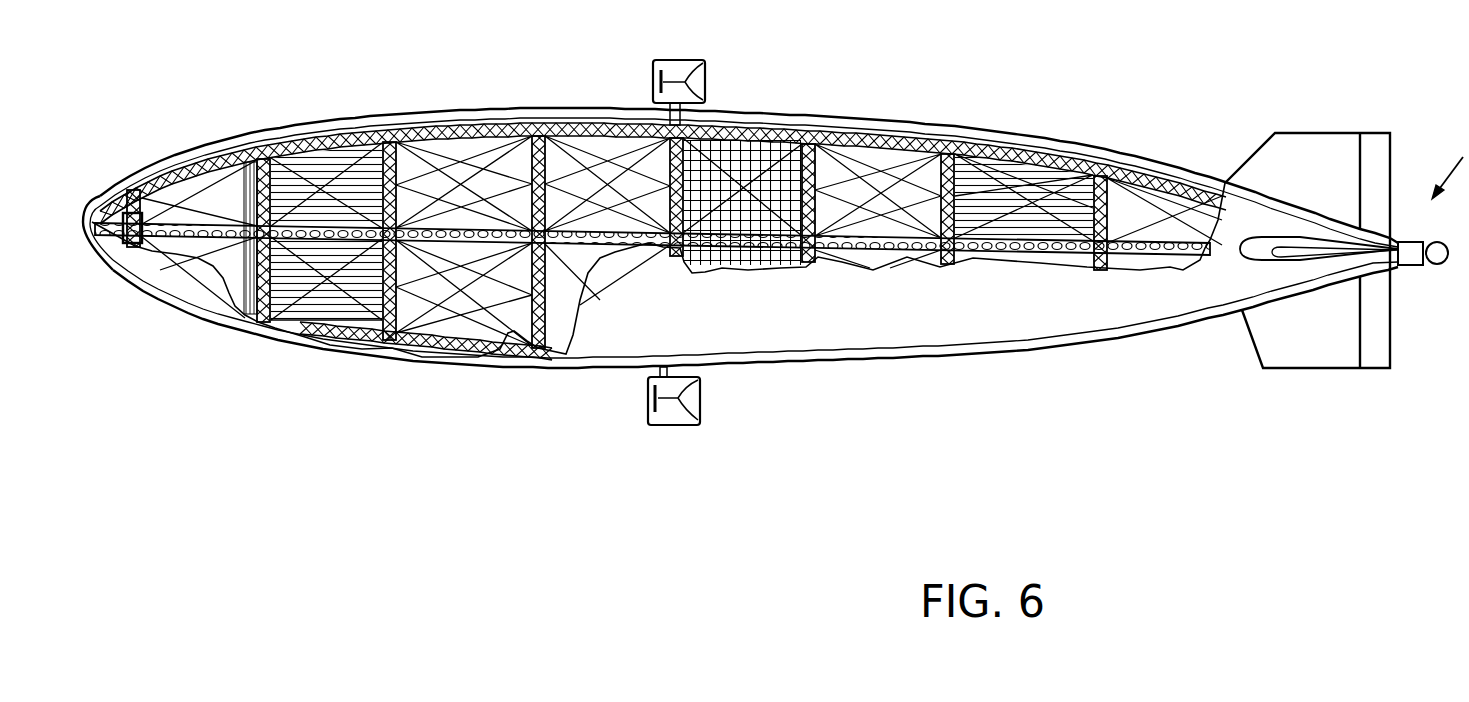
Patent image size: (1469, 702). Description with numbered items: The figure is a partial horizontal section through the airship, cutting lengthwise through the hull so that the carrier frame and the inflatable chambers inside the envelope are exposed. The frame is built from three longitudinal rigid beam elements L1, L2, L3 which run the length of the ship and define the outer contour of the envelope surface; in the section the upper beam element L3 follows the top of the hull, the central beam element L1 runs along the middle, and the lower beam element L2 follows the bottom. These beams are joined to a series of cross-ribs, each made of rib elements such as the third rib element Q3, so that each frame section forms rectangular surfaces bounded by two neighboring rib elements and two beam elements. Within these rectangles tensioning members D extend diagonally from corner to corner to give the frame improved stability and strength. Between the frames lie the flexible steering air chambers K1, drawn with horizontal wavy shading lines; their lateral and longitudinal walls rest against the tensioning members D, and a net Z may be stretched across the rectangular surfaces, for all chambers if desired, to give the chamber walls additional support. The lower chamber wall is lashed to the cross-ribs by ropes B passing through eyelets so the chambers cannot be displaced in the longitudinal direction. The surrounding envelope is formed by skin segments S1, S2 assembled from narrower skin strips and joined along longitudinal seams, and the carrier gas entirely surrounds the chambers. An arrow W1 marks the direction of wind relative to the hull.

The steering air chamber K1 is at (325, 158).
The ropes B is at (392, 140).
The longitudinal rigid beam element L3 is at (597, 130).
The net Z is at (740, 150).
The tensioning members D is at (917, 183).
The wind direction W1 is at (1447, 163).
The longitudinal rigid beam element L2 is at (413, 350).
The third rib element Q3 is at (513, 330).
The longitudinal rigid beam element L1 is at (562, 243).
The skin segment S1 is at (870, 310).
The skin segment S2 is at (960, 353).